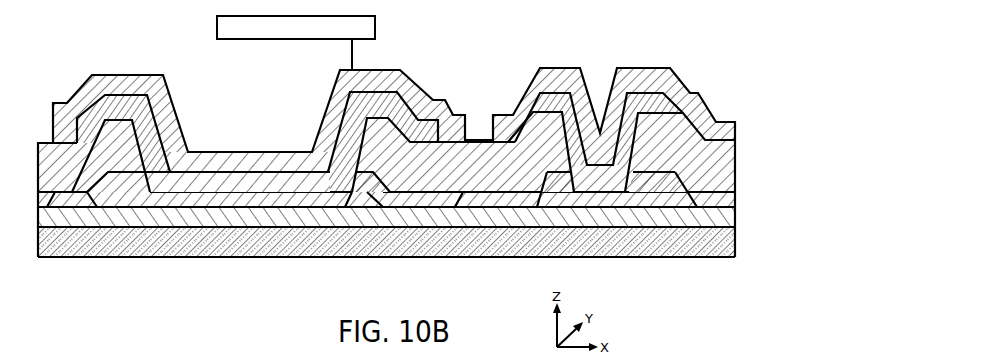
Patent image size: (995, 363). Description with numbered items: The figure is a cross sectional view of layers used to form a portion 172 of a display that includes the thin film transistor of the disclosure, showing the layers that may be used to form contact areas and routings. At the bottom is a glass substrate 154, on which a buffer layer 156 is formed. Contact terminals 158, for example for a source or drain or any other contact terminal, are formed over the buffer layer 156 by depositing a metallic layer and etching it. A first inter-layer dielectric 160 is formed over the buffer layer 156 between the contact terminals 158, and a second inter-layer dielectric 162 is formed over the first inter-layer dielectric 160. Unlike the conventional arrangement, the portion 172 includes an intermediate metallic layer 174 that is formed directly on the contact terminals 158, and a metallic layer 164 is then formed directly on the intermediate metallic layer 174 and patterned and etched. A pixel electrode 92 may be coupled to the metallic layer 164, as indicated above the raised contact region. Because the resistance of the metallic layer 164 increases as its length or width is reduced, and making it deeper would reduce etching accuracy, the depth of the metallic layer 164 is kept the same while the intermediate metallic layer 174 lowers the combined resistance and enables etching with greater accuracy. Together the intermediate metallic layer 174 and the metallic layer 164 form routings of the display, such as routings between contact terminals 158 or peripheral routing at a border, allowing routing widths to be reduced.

The pixel electrode 92 is at (268, 40).
The glass substrate 154 is at (153, 247).
The buffer layer 156 is at (237, 210).
The contact terminals 158 is at (278, 200).
The first inter-layer dielectric 160 is at (50, 198).
The second inter-layer dielectric 162 is at (43, 143).
The metallic layer 164 is at (407, 83).
The portion of a display 172 is at (600, 34).
The intermediate metallic layer 174 is at (152, 140).